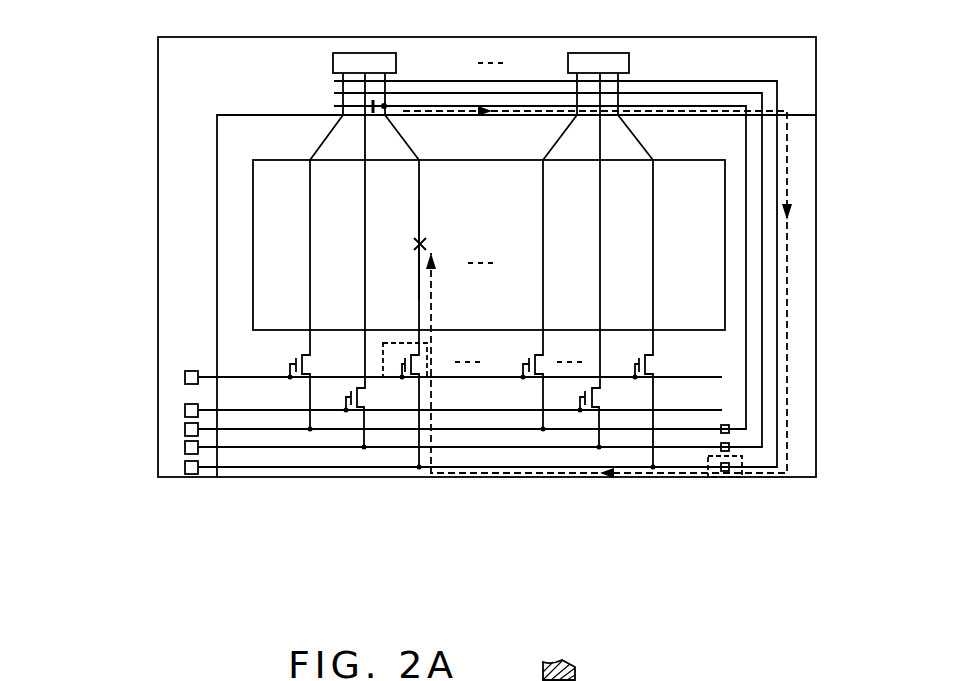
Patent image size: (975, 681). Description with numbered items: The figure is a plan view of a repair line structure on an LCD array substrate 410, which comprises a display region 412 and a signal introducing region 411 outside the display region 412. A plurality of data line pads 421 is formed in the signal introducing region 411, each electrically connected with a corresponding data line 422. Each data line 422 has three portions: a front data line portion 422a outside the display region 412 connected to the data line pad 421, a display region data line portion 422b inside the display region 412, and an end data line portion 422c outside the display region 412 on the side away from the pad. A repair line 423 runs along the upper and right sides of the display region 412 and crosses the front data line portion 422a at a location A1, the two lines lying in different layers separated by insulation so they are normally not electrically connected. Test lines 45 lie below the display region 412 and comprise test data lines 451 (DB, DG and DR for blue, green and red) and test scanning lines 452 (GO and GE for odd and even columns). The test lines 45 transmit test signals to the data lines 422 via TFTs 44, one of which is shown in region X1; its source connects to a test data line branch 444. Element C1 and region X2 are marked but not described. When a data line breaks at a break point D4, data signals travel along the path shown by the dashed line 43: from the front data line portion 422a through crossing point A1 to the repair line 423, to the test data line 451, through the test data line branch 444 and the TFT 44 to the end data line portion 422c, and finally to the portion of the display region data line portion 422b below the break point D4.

The array substrate 410 is at (152, 81).
The signal introducing region 411 is at (742, 67).
The display region 412 is at (678, 192).
The data line pad 421 is at (598, 68).
The data line 422 is at (218, 271).
The front data line portion 422a is at (327, 136).
The display region data line portion 422b is at (310, 260).
The end data line portion 422c is at (308, 335).
The repair line 423 is at (778, 272).
The dashed line 43 is at (787, 337).
The TFT 44 is at (653, 358).
The test data line branch 444 is at (421, 422).
The test lines 45 is at (133, 422).
The test data lines 451 is at (153, 448).
The test scanning lines 452 is at (158, 370).
The crossing point A1 is at (386, 108).
The capacitor C1 is at (373, 115).
The break point D4 is at (406, 244).
The region X1 is at (433, 345).
The region X2 is at (743, 461).